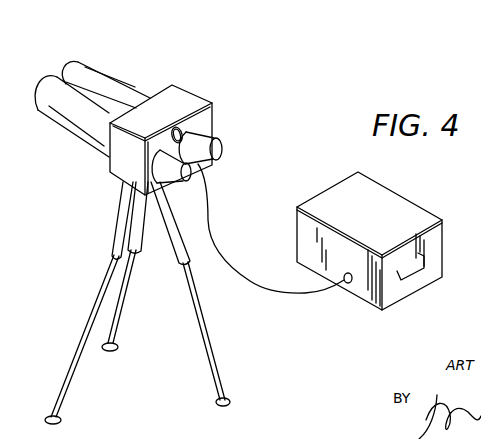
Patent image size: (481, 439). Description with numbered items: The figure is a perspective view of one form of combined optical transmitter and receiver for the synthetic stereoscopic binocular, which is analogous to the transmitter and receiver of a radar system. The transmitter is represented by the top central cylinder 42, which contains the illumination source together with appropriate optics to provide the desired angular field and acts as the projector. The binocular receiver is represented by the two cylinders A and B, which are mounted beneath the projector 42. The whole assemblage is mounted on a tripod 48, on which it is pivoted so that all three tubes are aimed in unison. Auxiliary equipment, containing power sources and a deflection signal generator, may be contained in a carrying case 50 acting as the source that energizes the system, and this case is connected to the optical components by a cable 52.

The cylinder 42 is at (83, 67).
The binocular cylinder A is at (68, 126).
The binocular cylinder B is at (117, 80).
The tripod 48 is at (73, 362).
The carrying case 50 is at (408, 212).
The cable 52 is at (284, 296).